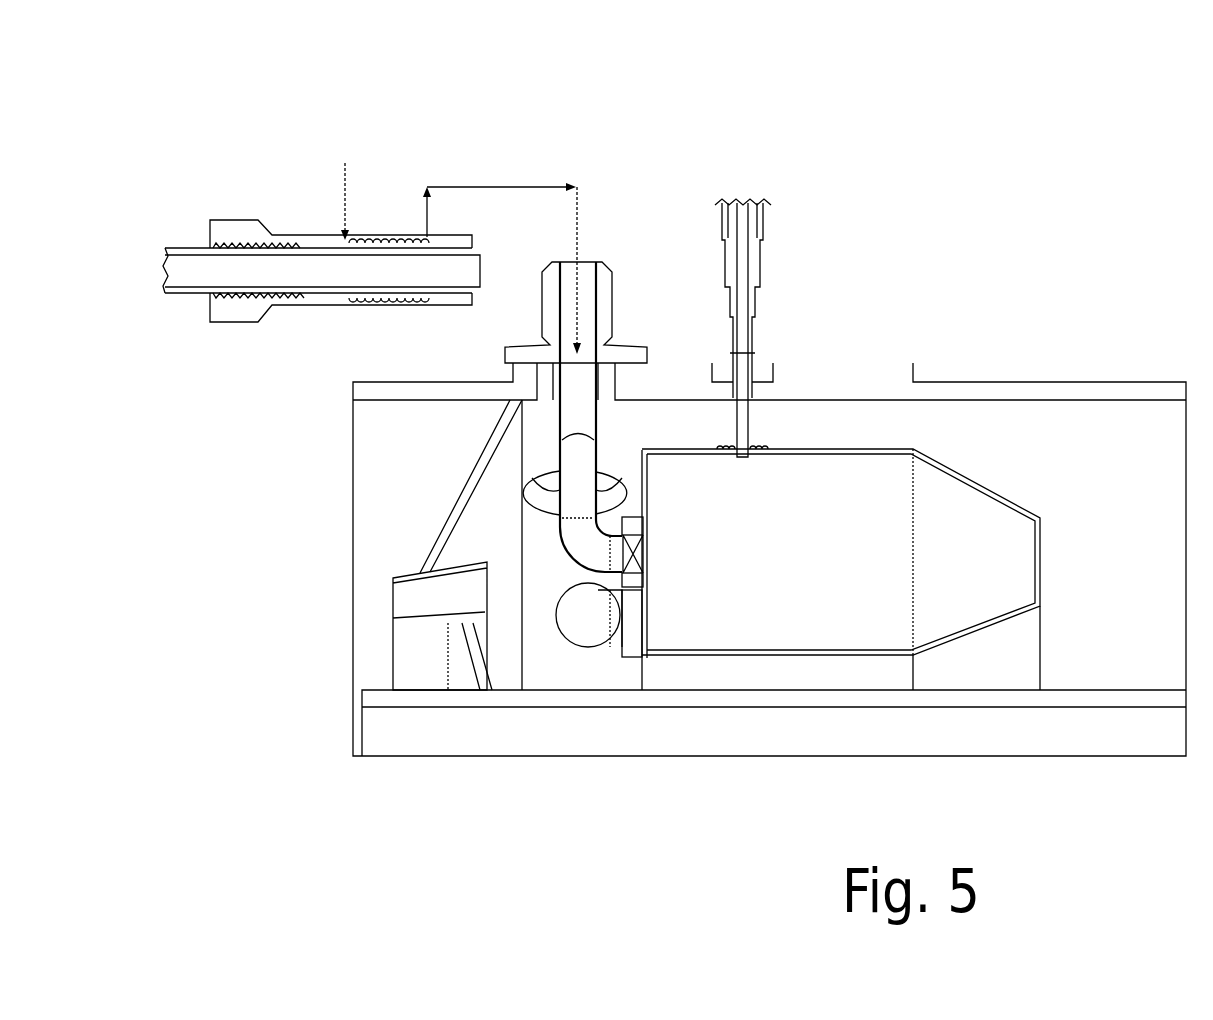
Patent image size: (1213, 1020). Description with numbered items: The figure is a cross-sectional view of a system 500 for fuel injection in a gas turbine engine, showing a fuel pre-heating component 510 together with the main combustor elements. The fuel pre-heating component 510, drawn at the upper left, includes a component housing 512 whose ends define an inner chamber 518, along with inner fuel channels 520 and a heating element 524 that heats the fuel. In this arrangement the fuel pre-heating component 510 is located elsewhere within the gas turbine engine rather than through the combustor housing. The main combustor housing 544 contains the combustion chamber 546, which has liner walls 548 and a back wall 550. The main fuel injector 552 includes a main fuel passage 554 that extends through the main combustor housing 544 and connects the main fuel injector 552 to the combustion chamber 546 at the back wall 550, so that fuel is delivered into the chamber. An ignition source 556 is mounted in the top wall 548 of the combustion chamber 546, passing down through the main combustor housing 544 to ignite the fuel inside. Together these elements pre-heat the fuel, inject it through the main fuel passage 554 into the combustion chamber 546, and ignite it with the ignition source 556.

The system for fuel injection 500 is at (576, 96).
The fuel pre-heating component 510 is at (209, 178).
The component housing 512 is at (307, 242).
The inner chamber 518 is at (342, 250).
The inner fuel channels 520 is at (391, 236).
The heating element 524 is at (385, 268).
The main combustor housing 544 is at (1089, 381).
The combustion chamber 546 is at (832, 577).
The liner walls 548 is at (870, 449).
The back wall 550 is at (643, 487).
The main fuel injector 552 is at (615, 637).
The main fuel passage 554 is at (585, 310).
The ignition source 556 is at (760, 278).